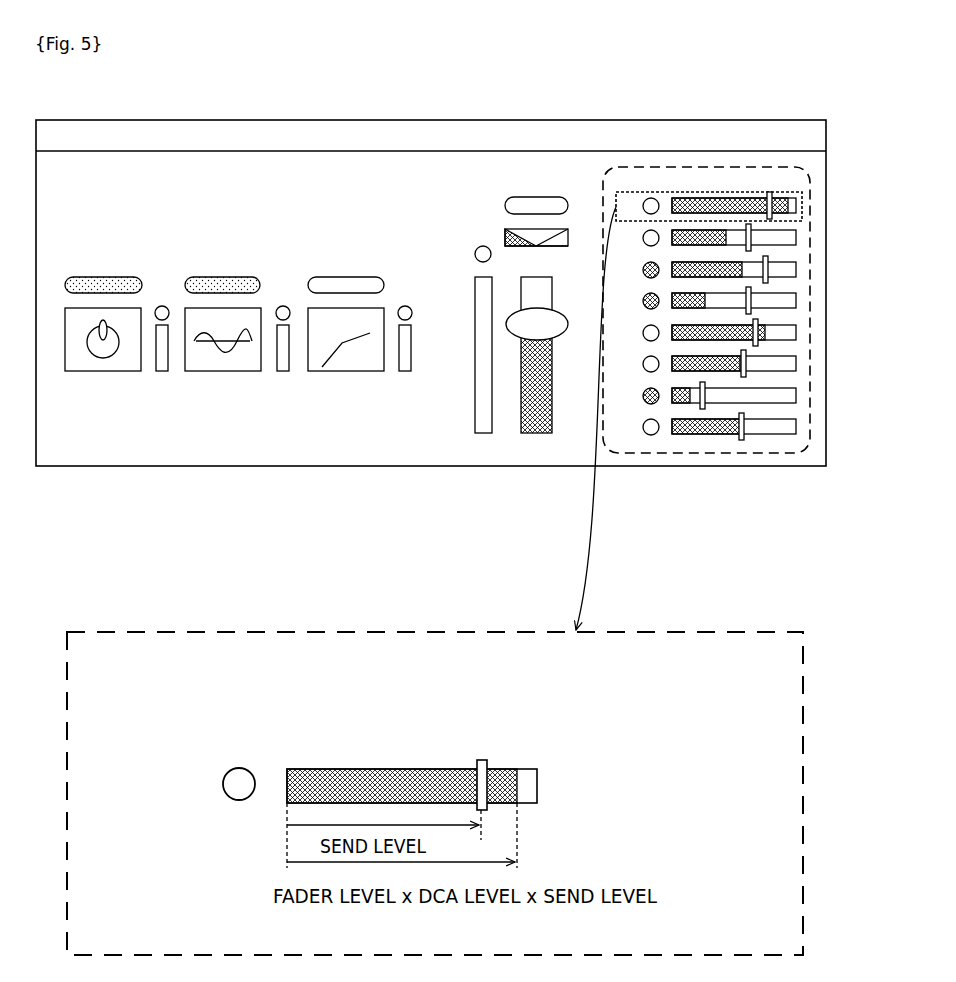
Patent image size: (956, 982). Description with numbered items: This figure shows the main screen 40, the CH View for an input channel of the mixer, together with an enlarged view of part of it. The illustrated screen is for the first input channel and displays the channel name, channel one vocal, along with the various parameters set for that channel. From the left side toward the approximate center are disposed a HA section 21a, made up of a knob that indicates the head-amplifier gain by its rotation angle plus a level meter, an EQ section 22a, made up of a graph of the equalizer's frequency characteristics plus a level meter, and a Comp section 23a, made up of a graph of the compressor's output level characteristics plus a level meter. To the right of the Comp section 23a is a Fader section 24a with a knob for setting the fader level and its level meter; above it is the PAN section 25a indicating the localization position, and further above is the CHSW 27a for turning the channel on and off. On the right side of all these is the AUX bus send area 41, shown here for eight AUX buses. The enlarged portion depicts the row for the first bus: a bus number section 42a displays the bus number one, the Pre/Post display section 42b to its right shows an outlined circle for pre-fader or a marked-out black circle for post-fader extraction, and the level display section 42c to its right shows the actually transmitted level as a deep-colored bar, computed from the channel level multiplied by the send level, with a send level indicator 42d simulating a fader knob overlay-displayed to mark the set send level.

The main screen 40 is at (664, 118).
The HA section 21a is at (124, 246).
The EQ section 22a is at (220, 265).
The Comp section 23a is at (334, 392).
The Fader section 24a is at (527, 448).
The PAN section 25a is at (500, 229).
The CHSW 27a is at (500, 196).
The AUX bus send area 41 is at (688, 476).
The bus number section 42a is at (181, 765).
The Pre/Post display section 42b is at (248, 765).
The level display section 42c is at (410, 765).
The send level indicator 42d is at (488, 812).